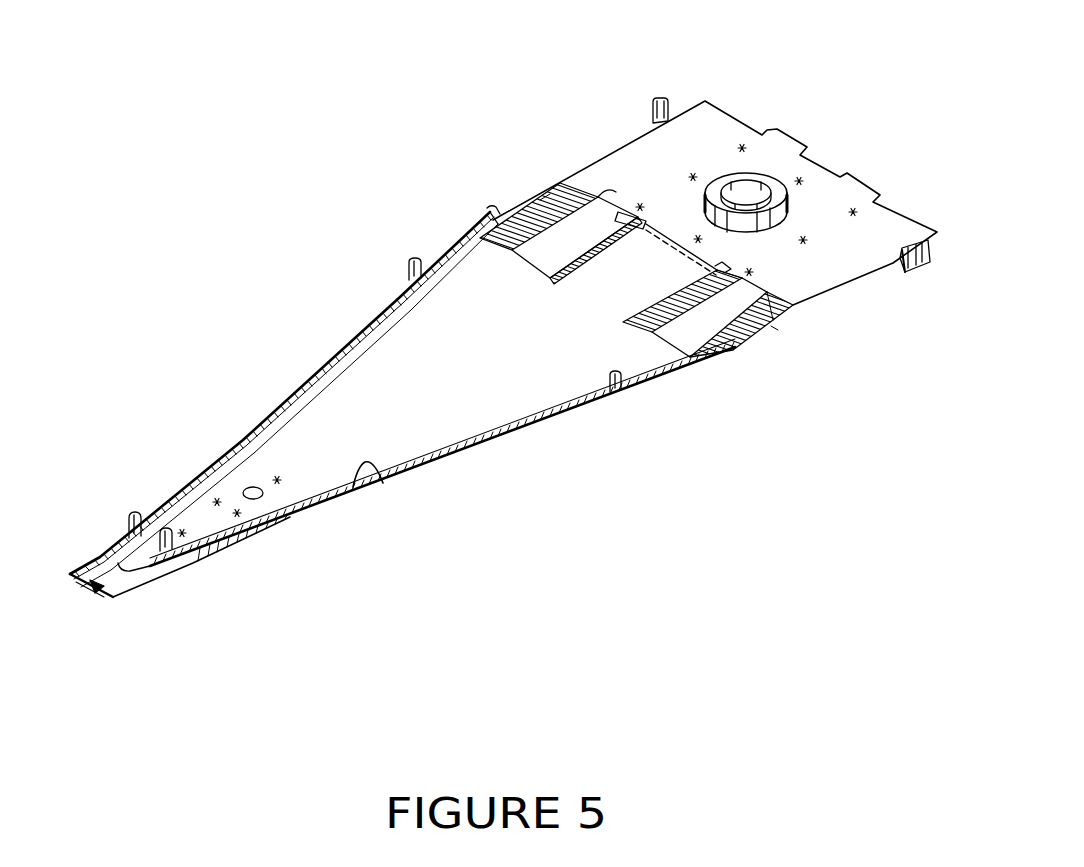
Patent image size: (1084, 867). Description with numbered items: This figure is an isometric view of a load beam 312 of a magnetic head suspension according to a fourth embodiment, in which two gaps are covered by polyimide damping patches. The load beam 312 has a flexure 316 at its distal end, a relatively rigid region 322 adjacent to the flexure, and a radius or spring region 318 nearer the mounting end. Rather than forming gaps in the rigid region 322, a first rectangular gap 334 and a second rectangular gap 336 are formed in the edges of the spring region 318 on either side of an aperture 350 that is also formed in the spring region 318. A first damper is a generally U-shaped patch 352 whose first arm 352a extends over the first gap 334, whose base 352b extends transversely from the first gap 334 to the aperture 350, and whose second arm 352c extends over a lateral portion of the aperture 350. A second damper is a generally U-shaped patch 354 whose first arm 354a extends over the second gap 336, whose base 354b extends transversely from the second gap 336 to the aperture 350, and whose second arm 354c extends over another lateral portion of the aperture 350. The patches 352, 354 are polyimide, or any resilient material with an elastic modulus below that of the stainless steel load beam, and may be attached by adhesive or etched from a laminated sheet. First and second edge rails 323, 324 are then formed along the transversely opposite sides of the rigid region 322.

The load beam 312 is at (255, 203).
The flexure 316 is at (133, 587).
The spring region 318 is at (773, 320).
The rigid region 322 is at (490, 442).
The first edge rail 323 is at (273, 412).
The second edge rail 324 is at (383, 483).
The first rectangular gap 334 is at (540, 200).
The second rectangular gap 336 is at (771, 326).
The aperture 350 is at (590, 285).
The first generally U-shaped patch 352 is at (479, 165).
The first arm 352a is at (580, 192).
The base 352b is at (497, 258).
The second arm 352c is at (640, 214).
The second generally U-shaped patch 354 is at (759, 372).
The first arm 354a is at (747, 337).
The base 354b is at (623, 322).
The second arm 354c is at (730, 272).